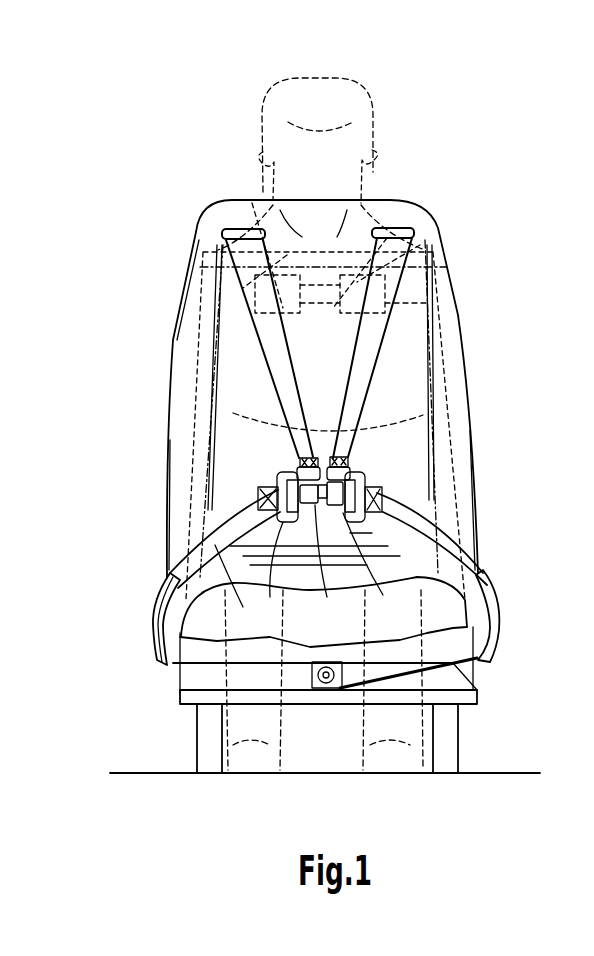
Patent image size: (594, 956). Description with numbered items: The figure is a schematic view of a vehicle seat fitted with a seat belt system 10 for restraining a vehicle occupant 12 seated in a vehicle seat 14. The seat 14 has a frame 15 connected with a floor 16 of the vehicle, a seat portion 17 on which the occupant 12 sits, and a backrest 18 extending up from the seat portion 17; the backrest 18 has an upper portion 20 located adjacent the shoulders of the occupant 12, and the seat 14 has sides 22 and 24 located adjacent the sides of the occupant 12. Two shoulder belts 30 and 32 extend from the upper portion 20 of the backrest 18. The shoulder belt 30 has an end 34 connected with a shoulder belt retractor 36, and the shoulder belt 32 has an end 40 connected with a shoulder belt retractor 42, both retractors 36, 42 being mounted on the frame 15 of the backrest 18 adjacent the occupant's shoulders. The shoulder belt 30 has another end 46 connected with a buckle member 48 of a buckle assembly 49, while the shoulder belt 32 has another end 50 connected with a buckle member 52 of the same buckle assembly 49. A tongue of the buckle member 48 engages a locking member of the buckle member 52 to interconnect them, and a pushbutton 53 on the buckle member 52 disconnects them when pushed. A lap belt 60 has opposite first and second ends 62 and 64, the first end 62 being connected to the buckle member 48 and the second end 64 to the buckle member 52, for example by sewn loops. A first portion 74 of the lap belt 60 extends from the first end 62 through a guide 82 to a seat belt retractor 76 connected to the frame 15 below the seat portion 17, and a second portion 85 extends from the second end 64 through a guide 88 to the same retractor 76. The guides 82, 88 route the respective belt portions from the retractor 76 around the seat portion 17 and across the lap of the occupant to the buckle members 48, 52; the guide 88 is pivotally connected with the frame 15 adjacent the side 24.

The seat belt system 10 is at (448, 147).
The vehicle occupant 12 is at (313, 103).
The vehicle seat 14 is at (210, 222).
The frame 15 is at (444, 370).
The floor 16 is at (140, 772).
The seat portion 17 is at (197, 548).
The backrest 18 is at (197, 255).
The upper portion 20 is at (432, 233).
The side 22 is at (483, 430).
The side 24 is at (168, 448).
The shoulder belt 30 is at (372, 340).
The shoulder belt 32 is at (270, 333).
The end 34 is at (375, 205).
The shoulder belt retractor 36 is at (433, 264).
The end 40 is at (252, 203).
The shoulder belt retractor 42 is at (255, 285).
The end 46 is at (345, 457).
The buckle member 48 is at (365, 473).
The buckle assembly 49 is at (383, 490).
The end 50 is at (298, 440).
The buckle member 52 is at (329, 563).
The pushbutton 53 is at (277, 472).
The lap belt 60 is at (417, 518).
The first end 62 is at (372, 566).
The second end 64 is at (227, 554).
The first portion 74 is at (427, 667).
The seat belt retractor 76 is at (311, 685).
The guide 82 is at (483, 577).
The second portion 85 is at (210, 667).
The guide 88 is at (168, 585).